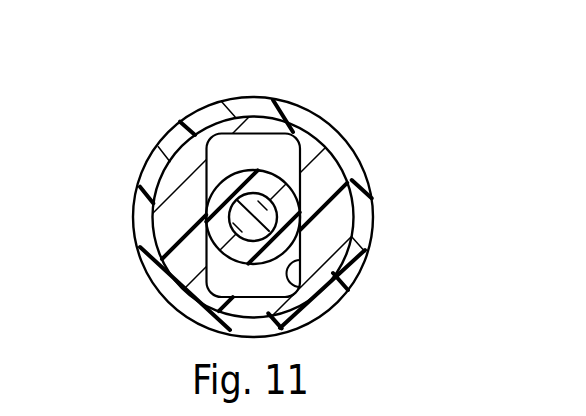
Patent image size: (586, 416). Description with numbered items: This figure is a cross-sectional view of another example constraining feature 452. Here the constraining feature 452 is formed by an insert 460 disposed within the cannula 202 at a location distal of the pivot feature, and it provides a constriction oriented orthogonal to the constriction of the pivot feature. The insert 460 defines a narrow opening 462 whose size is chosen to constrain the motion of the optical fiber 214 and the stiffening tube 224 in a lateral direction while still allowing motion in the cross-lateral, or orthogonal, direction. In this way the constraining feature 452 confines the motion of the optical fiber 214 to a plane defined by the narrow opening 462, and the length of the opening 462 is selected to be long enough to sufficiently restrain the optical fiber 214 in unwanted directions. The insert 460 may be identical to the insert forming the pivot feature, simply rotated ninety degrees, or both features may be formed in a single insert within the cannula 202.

The constraining feature 452 is at (222, 77).
The cannula 202 is at (155, 286).
The insert 460 is at (312, 132).
The stiffening tube 224 is at (233, 172).
The optical fiber 214 is at (276, 203).
The narrow opening 462 is at (301, 288).